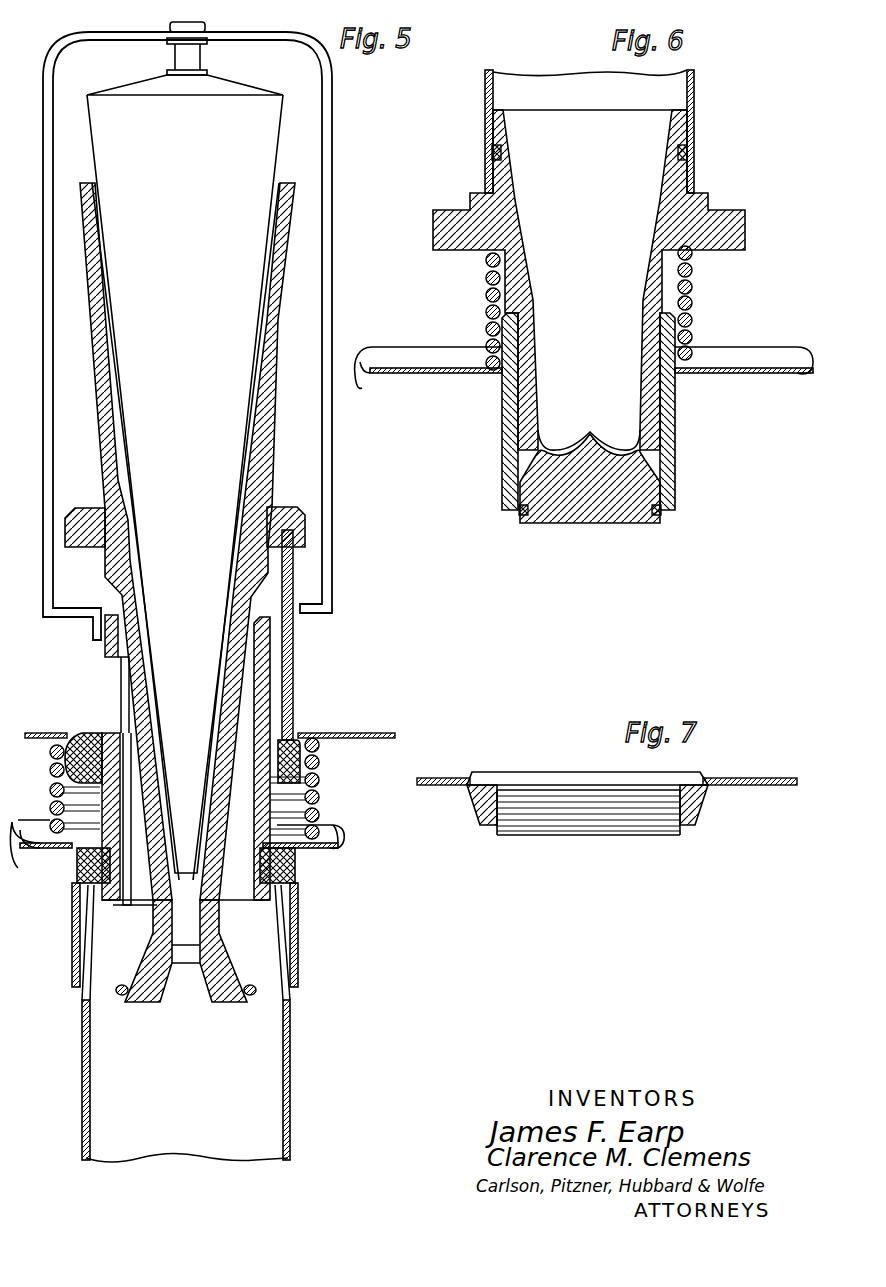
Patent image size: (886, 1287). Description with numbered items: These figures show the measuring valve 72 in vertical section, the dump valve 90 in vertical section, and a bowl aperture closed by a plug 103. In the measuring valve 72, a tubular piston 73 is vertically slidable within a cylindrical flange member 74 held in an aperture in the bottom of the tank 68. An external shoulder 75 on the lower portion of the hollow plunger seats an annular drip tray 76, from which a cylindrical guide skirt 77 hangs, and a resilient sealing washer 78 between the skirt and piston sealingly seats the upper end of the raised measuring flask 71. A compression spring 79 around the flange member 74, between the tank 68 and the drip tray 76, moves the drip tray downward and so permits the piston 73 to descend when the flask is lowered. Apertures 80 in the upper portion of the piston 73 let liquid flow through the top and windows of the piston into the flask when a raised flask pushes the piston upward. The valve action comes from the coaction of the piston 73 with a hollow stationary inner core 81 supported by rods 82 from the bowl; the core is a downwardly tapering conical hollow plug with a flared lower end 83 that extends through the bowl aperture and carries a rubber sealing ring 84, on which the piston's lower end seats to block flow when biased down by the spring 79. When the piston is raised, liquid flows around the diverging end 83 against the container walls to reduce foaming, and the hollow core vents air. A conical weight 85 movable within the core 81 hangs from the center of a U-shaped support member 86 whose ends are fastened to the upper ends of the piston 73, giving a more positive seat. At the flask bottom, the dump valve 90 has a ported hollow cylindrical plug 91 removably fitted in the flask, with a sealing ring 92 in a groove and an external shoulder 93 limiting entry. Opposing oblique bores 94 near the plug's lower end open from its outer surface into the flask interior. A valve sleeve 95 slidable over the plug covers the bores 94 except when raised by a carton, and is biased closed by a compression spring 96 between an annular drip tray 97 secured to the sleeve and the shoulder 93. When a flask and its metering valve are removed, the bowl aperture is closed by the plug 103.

In FIG. 5, the tank 68 is at (340, 735).
In FIG. 5, the measuring flask 71 is at (292, 1080).
In FIG. 6, the measuring flask 71 is at (694, 82).
In FIG. 5, the measuring valve 72 is at (352, 632).
In FIG. 5, the tubular piston 73 is at (270, 712).
In FIG. 5, the cylindrical flange member 74 is at (85, 745).
In FIG. 5, the external shoulder 75 is at (118, 870).
In FIG. 5, the annular drip tray 76 is at (338, 845).
In FIG. 5, the cylindrical guide skirt 77 is at (298, 945).
In FIG. 5, the resilient sealing washer 78 is at (98, 885).
In FIG. 5, the compression spring 79 is at (319, 793).
In FIG. 5, the apertures 80 is at (124, 694).
In FIG. 5, the inner core 81 is at (276, 371).
In FIG. 5, the rods 82 is at (290, 684).
In FIG. 5, the flared lower end 83 is at (228, 968).
In FIG. 5, the rubber sealing ring 84 is at (248, 997).
In FIG. 5, the conical weight 85 is at (192, 356).
In FIG. 5, the U-shaped support member 86 is at (333, 170).
In FIG. 6, the dump valve 90 is at (478, 420).
In FIG. 6, the hollow cylindrical plug 91 is at (605, 525).
In FIG. 6, the sealing ring 92 is at (688, 155).
In FIG. 6, the external shoulder 93 is at (746, 236).
In FIG. 6, the oblique bores 94 is at (624, 446).
In FIG. 6, the valve sleeve 95 is at (677, 467).
In FIG. 6, the compression spring 96 is at (692, 298).
In FIG. 6, the annular drip tray 97 is at (430, 355).
In FIG. 7, the plug 103 is at (573, 820).